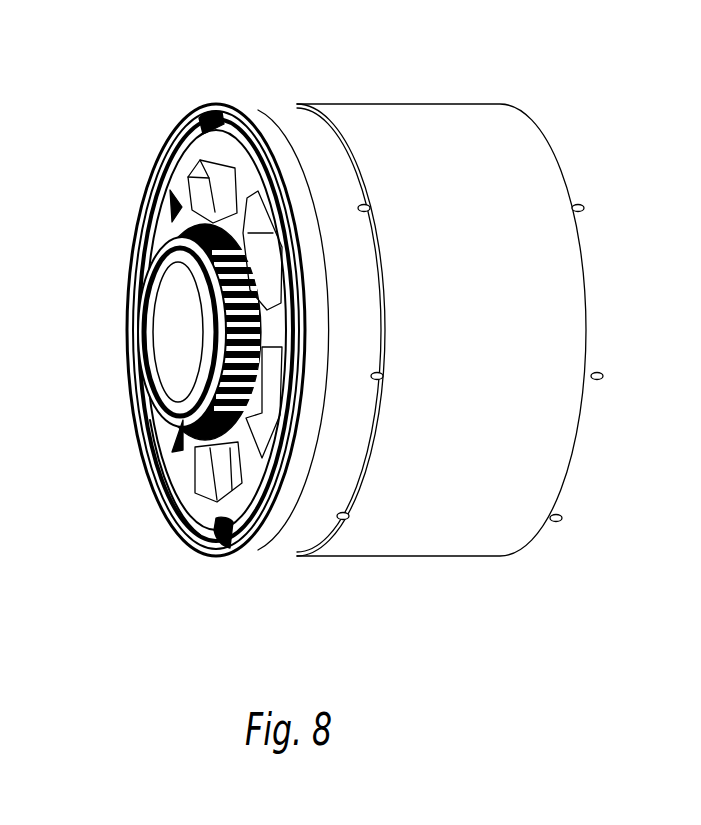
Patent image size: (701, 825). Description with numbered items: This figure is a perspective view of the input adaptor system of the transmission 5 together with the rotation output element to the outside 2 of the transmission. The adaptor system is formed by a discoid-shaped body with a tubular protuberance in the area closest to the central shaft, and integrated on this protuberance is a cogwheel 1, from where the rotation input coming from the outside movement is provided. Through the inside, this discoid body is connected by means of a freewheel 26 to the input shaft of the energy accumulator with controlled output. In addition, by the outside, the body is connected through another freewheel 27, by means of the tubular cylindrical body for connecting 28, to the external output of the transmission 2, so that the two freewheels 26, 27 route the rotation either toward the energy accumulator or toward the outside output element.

The cogwheel 1 is at (152, 157).
The rotation output element to the outside 2 is at (385, 70).
The transmission 5 is at (240, 74).
The freewheel 26 is at (138, 440).
The freewheel 27 is at (232, 548).
The tubular cylindrical body for connecting 28 is at (298, 483).